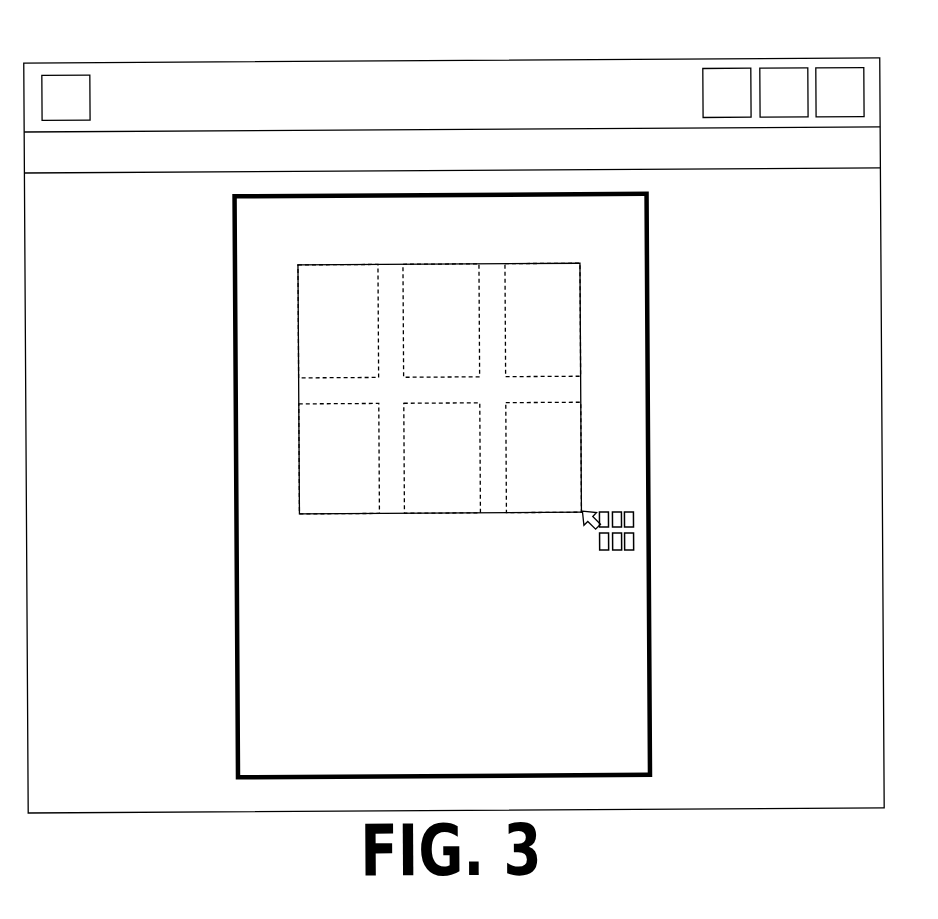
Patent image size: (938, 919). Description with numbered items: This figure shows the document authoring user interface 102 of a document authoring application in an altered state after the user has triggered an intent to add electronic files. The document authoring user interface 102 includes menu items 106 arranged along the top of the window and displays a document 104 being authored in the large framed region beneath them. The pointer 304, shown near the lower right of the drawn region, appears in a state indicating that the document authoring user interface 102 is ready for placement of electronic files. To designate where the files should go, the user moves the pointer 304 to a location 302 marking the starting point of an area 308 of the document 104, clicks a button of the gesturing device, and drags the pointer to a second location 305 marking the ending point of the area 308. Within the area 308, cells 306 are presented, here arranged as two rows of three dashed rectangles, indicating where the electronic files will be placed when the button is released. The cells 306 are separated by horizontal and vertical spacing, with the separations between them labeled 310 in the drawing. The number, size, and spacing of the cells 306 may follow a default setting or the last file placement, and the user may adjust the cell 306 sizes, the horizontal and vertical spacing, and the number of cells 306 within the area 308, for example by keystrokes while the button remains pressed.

The document authoring user interface 102 is at (431, 60).
The document 104 is at (236, 232).
The menu items 106 is at (646, 151).
The location of a starting point 302 is at (511, 395).
The pointer 304 is at (567, 531).
The second location of an ending point 305 is at (595, 505).
The cells 306 is at (439, 388).
The area 308 is at (590, 384).
The column separations 310 is at (492, 520).